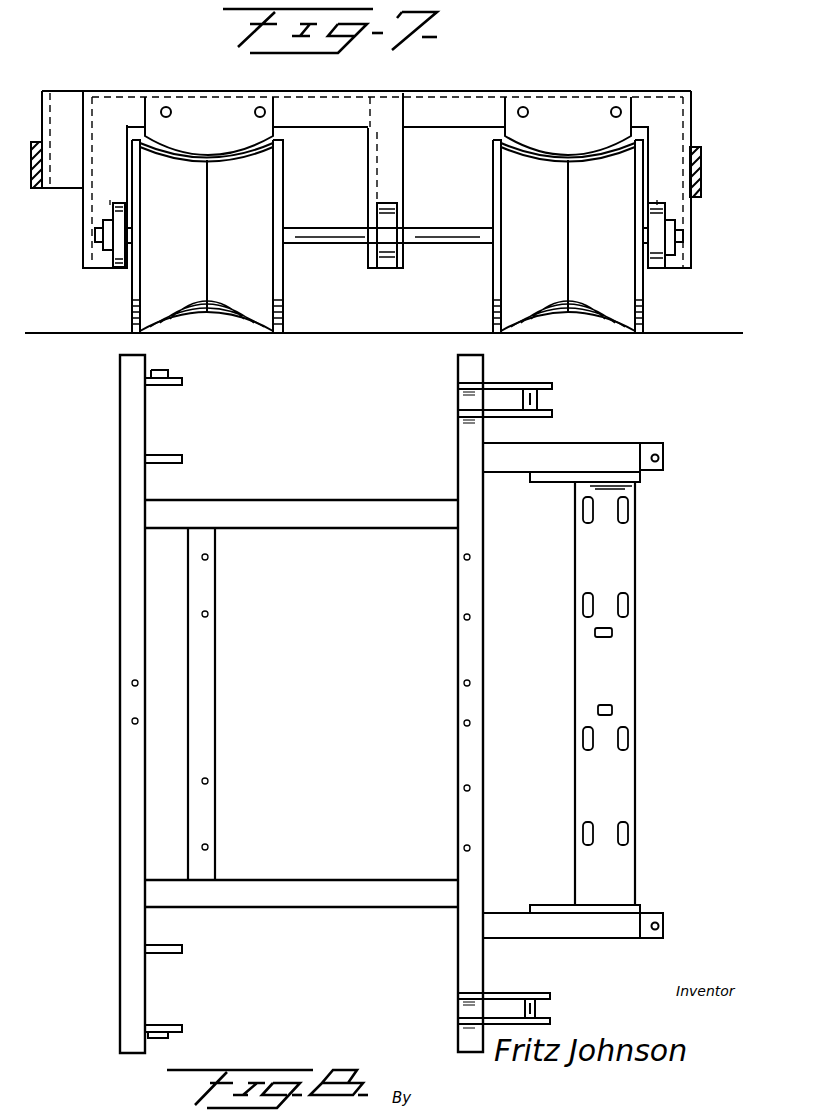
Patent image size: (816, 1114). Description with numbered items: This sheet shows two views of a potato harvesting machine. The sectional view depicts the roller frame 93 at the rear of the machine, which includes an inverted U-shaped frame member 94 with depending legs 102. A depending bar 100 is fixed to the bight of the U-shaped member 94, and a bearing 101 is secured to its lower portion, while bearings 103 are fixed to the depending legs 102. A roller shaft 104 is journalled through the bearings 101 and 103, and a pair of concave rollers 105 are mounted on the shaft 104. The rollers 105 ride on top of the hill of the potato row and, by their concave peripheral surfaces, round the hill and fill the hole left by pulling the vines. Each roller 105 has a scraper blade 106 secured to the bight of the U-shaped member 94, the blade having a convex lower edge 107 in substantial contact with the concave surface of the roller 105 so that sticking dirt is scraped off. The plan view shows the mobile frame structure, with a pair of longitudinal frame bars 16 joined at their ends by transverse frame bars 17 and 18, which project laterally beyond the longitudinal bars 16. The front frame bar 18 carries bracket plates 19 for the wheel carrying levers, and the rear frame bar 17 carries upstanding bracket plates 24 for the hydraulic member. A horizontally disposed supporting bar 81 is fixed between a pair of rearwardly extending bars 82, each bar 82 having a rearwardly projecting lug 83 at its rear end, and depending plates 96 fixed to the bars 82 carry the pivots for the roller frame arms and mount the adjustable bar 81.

In FIG. 7, the roller frame 93 is at (471, 90).
In FIG. 7, the inverted U-shaped frame member 94 is at (645, 94).
In FIG. 7, the depending bar 100 is at (368, 164).
In FIG. 7, the bearing 101 is at (383, 247).
In FIG. 7, the depending legs 102 is at (680, 212).
In FIG. 7, the bearings 103 is at (658, 255).
In FIG. 7, the roller shaft 104 is at (447, 238).
In FIG. 7, the concave rollers 105 is at (260, 277).
In FIG. 7, the scraper blade 106 is at (181, 133).
In FIG. 7, the convex lower edge 107 is at (232, 157).
In FIG. 8, the longitudinal frame bars 16 is at (340, 507).
In FIG. 8, the rear transverse frame bar 17 is at (460, 588).
In FIG. 8, the front transverse frame bar 18 is at (126, 613).
In FIG. 8, the bracket plates 19 is at (174, 463).
In FIG. 8, the upstanding bracket plates 24 is at (507, 384).
In FIG. 8, the supporting bar 81 is at (622, 860).
In FIG. 8, the rearwardly extending bars 82 is at (597, 447).
In FIG. 8, the lug 83 is at (663, 461).
In FIG. 8, the depending plates 96 is at (544, 904).